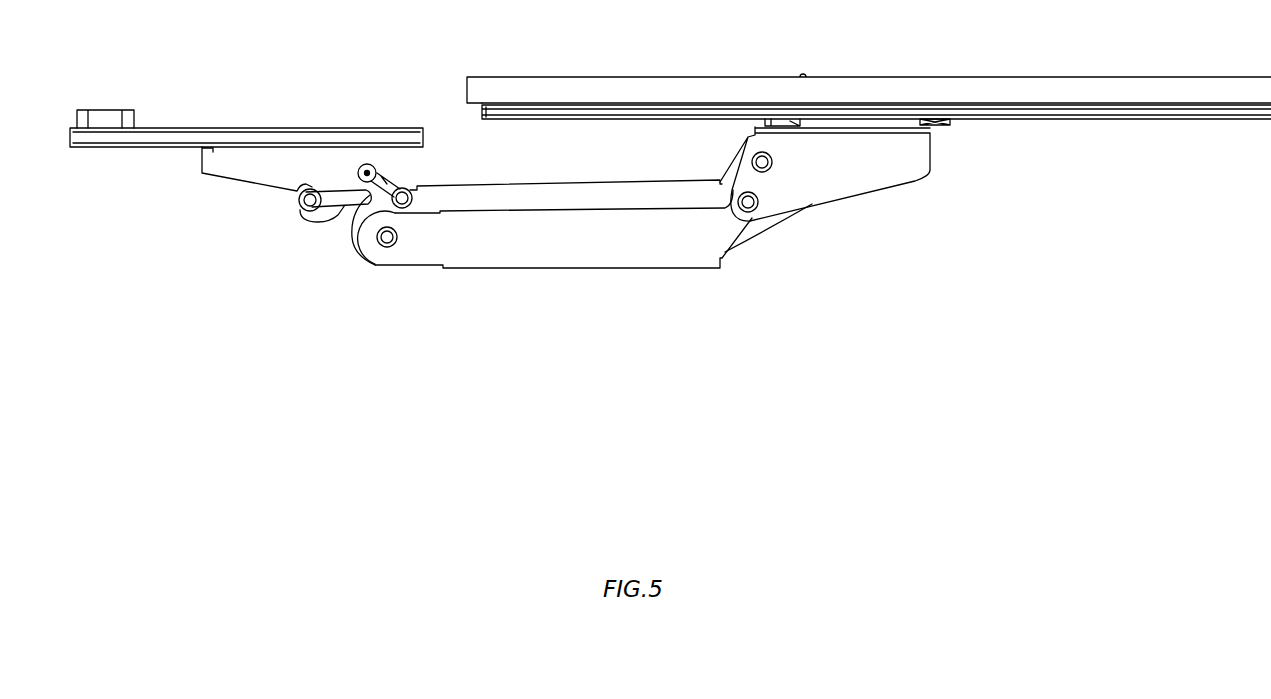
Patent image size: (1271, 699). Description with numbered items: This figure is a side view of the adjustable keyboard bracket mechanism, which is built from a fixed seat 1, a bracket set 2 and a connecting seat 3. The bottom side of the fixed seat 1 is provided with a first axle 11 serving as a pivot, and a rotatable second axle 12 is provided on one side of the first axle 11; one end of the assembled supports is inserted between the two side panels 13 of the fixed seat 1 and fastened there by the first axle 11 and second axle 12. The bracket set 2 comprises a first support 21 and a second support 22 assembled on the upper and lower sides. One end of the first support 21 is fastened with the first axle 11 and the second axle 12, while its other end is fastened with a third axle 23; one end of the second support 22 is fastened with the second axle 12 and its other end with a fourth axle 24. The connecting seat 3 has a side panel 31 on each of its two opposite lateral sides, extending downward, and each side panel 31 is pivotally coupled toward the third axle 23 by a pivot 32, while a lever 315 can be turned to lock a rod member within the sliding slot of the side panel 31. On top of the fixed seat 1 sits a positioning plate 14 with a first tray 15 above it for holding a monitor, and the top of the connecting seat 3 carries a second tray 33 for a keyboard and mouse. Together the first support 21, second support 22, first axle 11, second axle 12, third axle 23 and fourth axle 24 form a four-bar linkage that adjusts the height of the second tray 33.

The fixed seat 1 is at (930, 122).
The first axle 11 is at (772, 167).
The second axle 12 is at (757, 205).
The side panels of the fixed seat 13 is at (895, 163).
The positioning plate 14 is at (1175, 115).
The first tray 15 is at (1061, 90).
The bracket set 2 is at (552, 243).
The first support 21 is at (622, 180).
The second support 22 is at (580, 245).
The third axle 23 is at (407, 191).
The fourth axle 24 is at (386, 247).
The connecting seat 3 is at (246, 180).
The side panel 31 is at (264, 170).
The pivot 32 is at (368, 164).
The second tray 33 is at (191, 140).
The lever 315 is at (342, 200).